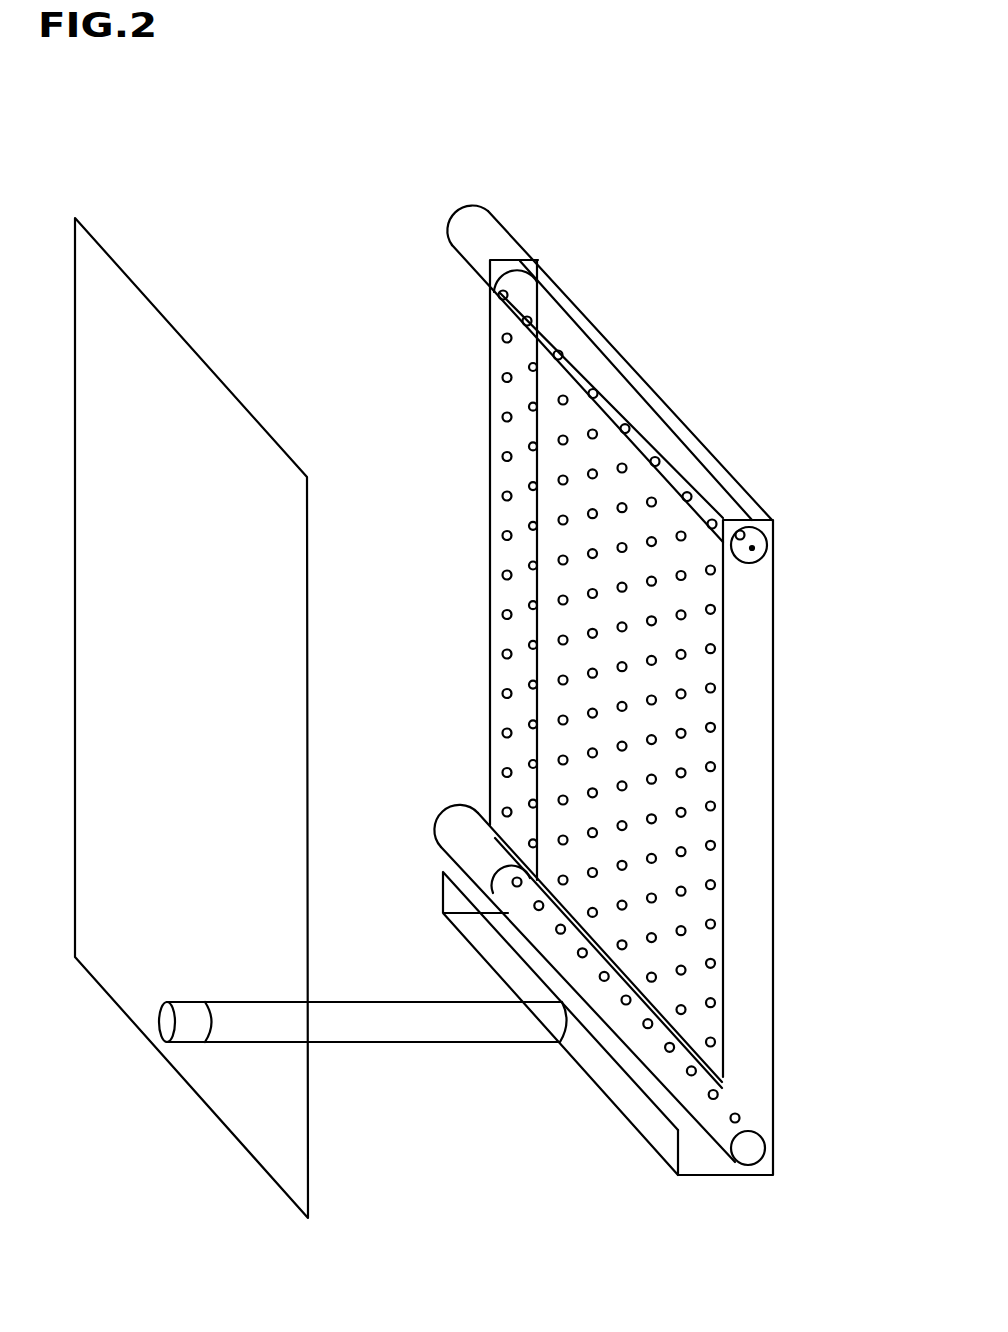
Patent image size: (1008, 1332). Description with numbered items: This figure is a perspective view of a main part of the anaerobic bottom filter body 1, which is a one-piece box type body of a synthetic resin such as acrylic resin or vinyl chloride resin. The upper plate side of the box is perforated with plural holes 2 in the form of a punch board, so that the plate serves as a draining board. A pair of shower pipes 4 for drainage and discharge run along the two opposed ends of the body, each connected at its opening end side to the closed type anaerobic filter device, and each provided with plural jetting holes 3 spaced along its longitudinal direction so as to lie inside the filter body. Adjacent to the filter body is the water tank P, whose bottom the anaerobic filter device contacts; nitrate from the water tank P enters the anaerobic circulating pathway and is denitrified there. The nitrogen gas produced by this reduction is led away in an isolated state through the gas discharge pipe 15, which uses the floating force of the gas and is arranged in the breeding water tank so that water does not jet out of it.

The water tank P is at (178, 377).
The gas discharge pipe 15 is at (198, 1025).
The anaerobic bottom filter body 1 is at (503, 557).
The holes 2 is at (505, 452).
The shower pipes 4 is at (493, 240).
The jetting holes 3 is at (753, 557).